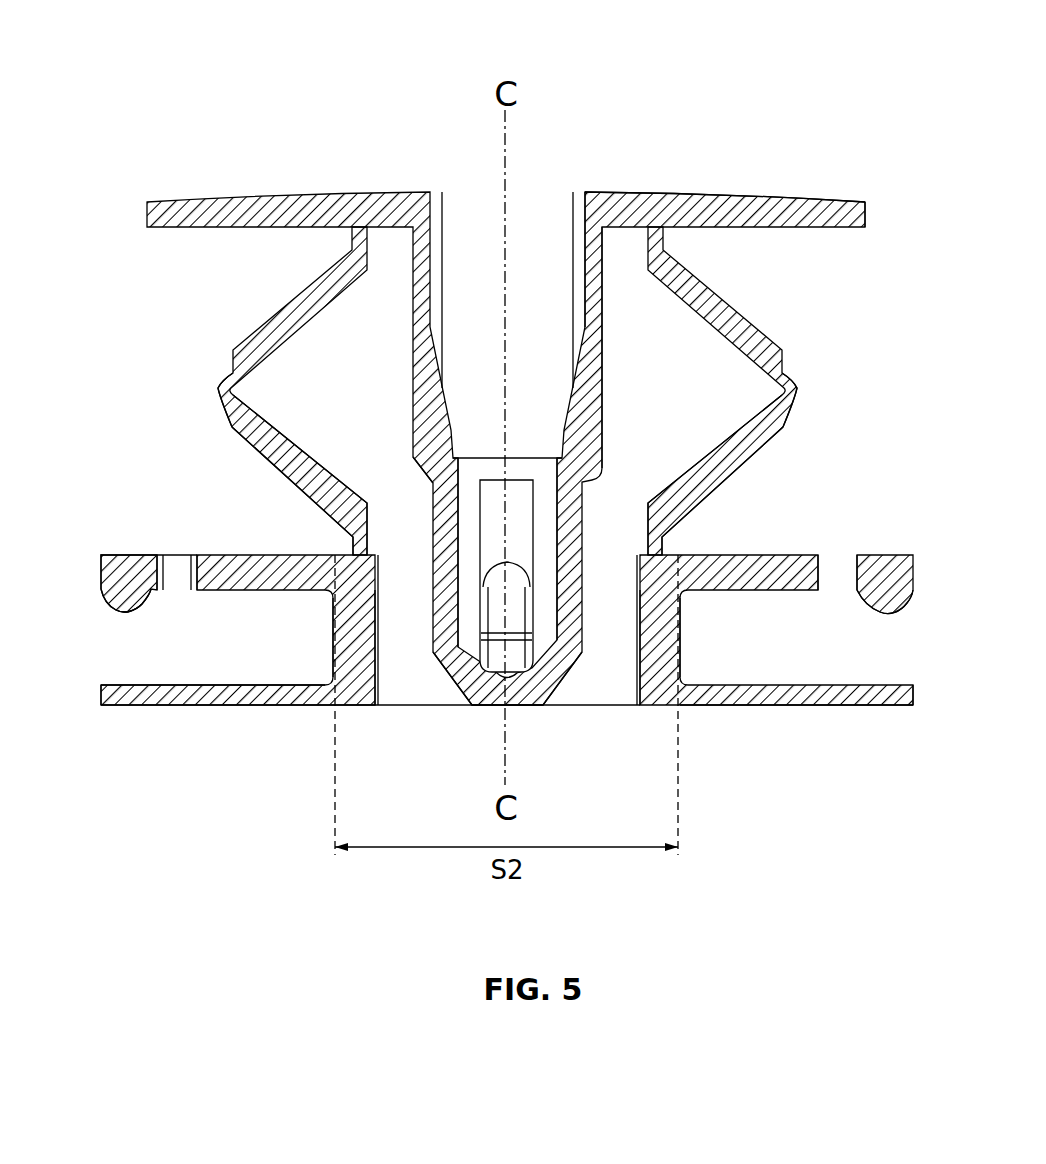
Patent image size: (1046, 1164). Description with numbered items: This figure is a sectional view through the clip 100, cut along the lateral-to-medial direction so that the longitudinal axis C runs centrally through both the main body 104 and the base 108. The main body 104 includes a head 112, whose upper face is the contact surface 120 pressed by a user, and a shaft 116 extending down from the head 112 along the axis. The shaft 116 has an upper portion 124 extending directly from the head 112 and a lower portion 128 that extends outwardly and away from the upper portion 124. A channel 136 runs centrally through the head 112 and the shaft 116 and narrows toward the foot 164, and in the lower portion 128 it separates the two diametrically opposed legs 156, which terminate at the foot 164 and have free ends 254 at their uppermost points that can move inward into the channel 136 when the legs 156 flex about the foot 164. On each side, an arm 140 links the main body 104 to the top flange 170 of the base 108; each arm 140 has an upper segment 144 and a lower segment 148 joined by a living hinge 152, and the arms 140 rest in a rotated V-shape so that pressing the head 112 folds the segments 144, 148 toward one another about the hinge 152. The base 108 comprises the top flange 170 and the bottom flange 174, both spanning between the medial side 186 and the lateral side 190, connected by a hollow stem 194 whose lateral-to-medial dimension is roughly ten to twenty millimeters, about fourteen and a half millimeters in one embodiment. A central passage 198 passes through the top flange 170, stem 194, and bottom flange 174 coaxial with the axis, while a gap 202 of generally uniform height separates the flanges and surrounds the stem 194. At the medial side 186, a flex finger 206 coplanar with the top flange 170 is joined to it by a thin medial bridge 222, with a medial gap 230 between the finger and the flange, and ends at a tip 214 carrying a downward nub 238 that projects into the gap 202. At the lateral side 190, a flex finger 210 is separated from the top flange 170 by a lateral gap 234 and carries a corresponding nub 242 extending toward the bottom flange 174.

The clip 100 is at (160, 52).
The main body 104 is at (173, 204).
The base 108 is at (193, 697).
The head 112 is at (848, 205).
The shaft 116 is at (597, 282).
The contact surface 120 is at (737, 193).
The upper portion 124 is at (603, 248).
The lower portion 128 is at (566, 552).
The channel 136 is at (566, 195).
The arms 140 is at (243, 417).
The upper segment 144 is at (283, 310).
The lower segment 148 is at (270, 453).
The hinge 152 is at (221, 386).
The legs 156 is at (490, 508).
The foot 164 is at (493, 697).
The top flange 170 is at (298, 567).
The bottom flange 174 is at (290, 697).
The medial side 186 is at (101, 695).
The lateral side 190 is at (910, 698).
The stem 194 is at (663, 672).
The central passage 198 is at (570, 715).
The gap 202 is at (750, 715).
The flex finger 206 is at (118, 557).
The flex finger 210 is at (890, 568).
The tip 214 is at (101, 570).
The medial bridge 222 is at (182, 565).
The medial gap 230 is at (158, 545).
The lateral gap 234 is at (840, 553).
The nub 238 is at (122, 614).
The nub 242 is at (895, 608).
The free end 254 is at (433, 487).